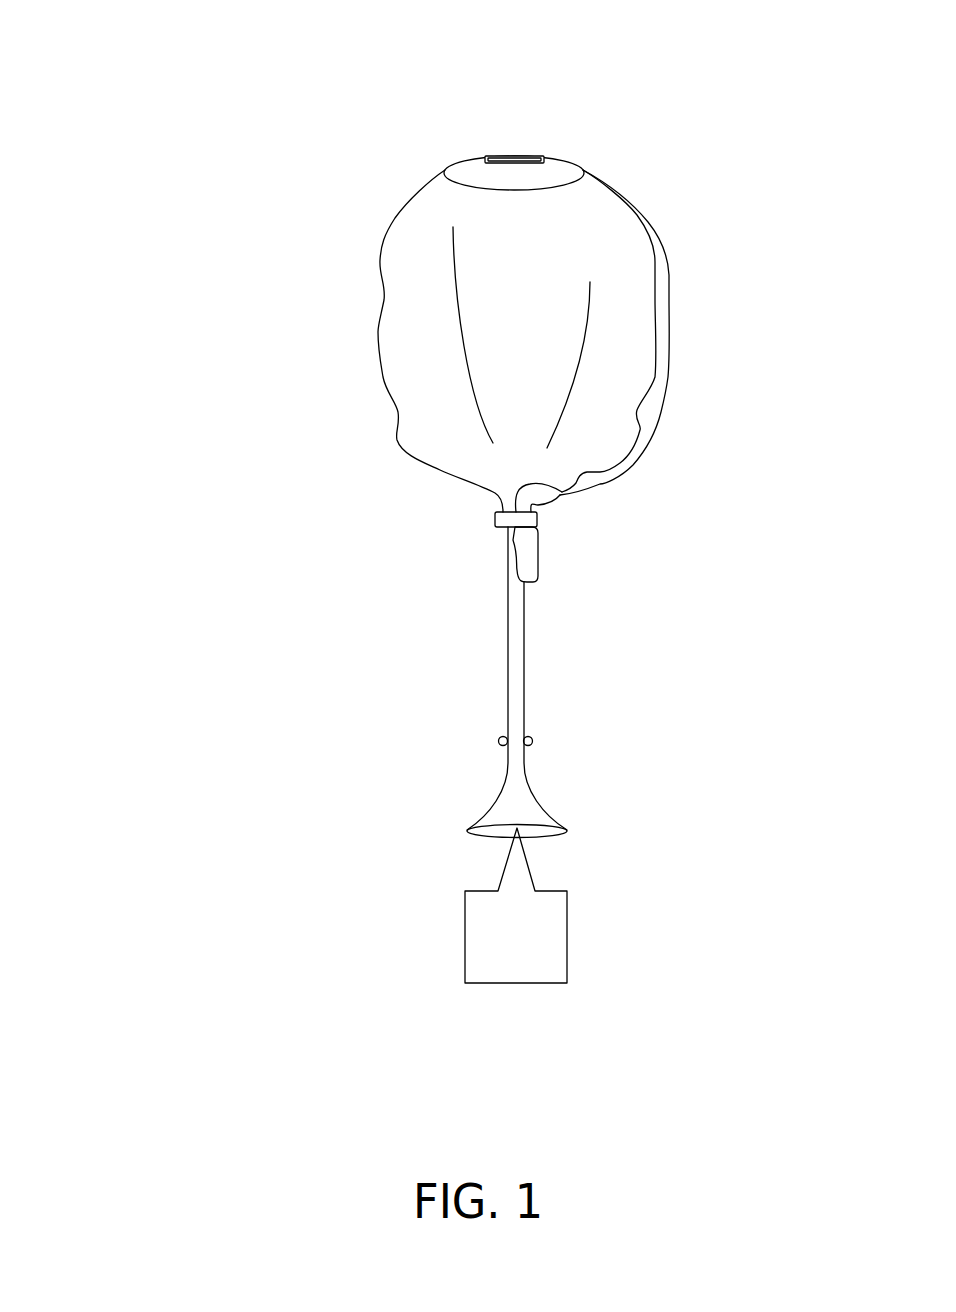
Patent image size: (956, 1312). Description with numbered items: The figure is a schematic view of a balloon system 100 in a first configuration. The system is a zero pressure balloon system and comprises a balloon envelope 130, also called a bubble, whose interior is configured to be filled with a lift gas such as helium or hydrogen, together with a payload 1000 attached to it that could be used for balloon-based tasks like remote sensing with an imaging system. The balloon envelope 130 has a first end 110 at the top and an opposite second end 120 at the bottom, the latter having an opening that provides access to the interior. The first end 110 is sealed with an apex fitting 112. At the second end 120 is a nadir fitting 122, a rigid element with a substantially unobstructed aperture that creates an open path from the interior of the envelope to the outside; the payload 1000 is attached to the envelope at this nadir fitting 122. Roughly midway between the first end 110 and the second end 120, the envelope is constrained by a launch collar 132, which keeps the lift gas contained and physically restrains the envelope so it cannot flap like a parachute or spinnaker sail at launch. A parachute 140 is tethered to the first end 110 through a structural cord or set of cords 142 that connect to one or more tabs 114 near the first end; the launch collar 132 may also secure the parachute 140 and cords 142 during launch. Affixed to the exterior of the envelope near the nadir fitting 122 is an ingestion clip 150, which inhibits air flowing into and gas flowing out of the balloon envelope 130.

The balloon system 100 is at (157, 57).
The first end 110 is at (486, 156).
The apex fitting 112 is at (527, 155).
The tabs 114 is at (475, 180).
The balloon envelope 130 is at (376, 327).
The cords 142 is at (670, 333).
The launch collar 132 is at (494, 520).
The parachute 140 is at (543, 555).
The ingestion clip 150 is at (538, 742).
The nadir fitting 122 is at (468, 831).
The second end 120 is at (486, 842).
The payload 1000 is at (462, 948).